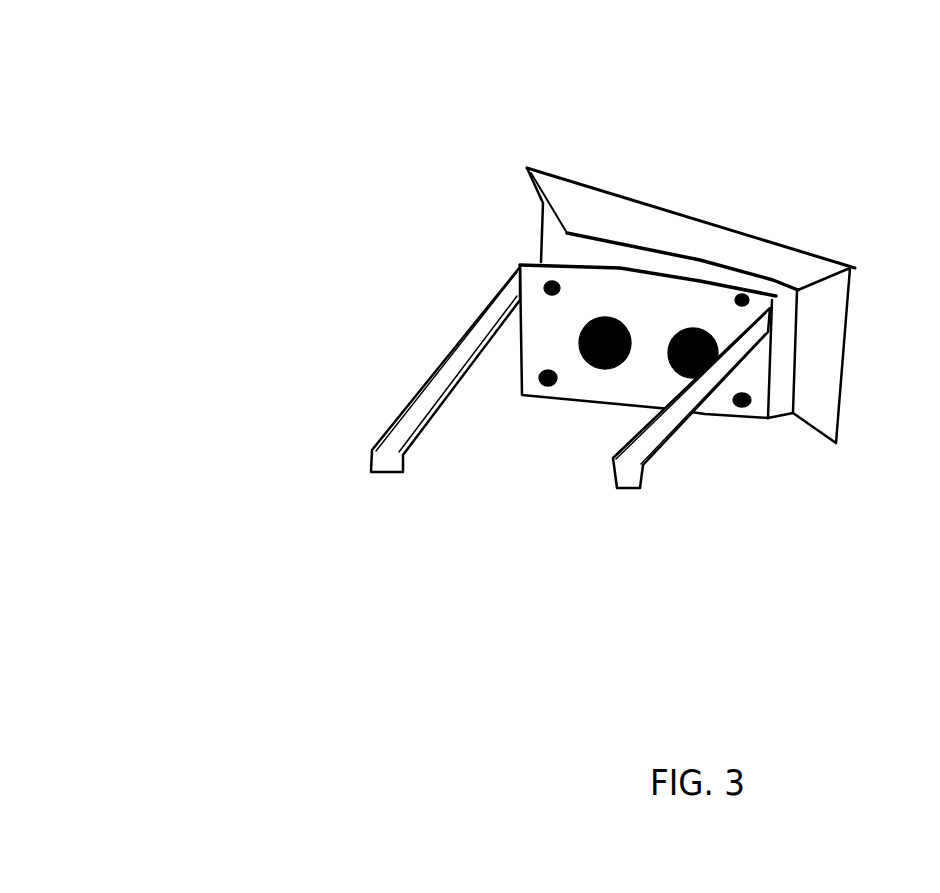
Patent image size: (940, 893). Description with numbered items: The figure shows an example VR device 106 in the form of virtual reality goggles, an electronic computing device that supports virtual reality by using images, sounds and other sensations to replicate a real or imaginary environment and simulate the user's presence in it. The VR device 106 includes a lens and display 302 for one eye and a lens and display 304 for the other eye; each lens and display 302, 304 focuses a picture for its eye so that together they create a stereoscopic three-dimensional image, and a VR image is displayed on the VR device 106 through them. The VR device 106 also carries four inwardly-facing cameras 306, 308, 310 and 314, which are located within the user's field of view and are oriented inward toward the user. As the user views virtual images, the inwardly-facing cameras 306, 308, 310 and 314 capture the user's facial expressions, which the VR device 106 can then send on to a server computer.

The VR device 106 is at (230, 59).
The lens and display 302 is at (607, 318).
The lens and display 304 is at (688, 330).
The inwardly-facing camera 306 is at (559, 258).
The inwardly-facing camera 308 is at (751, 280).
The inwardly-facing camera 310 is at (542, 397).
The inwardly-facing camera 314 is at (745, 421).